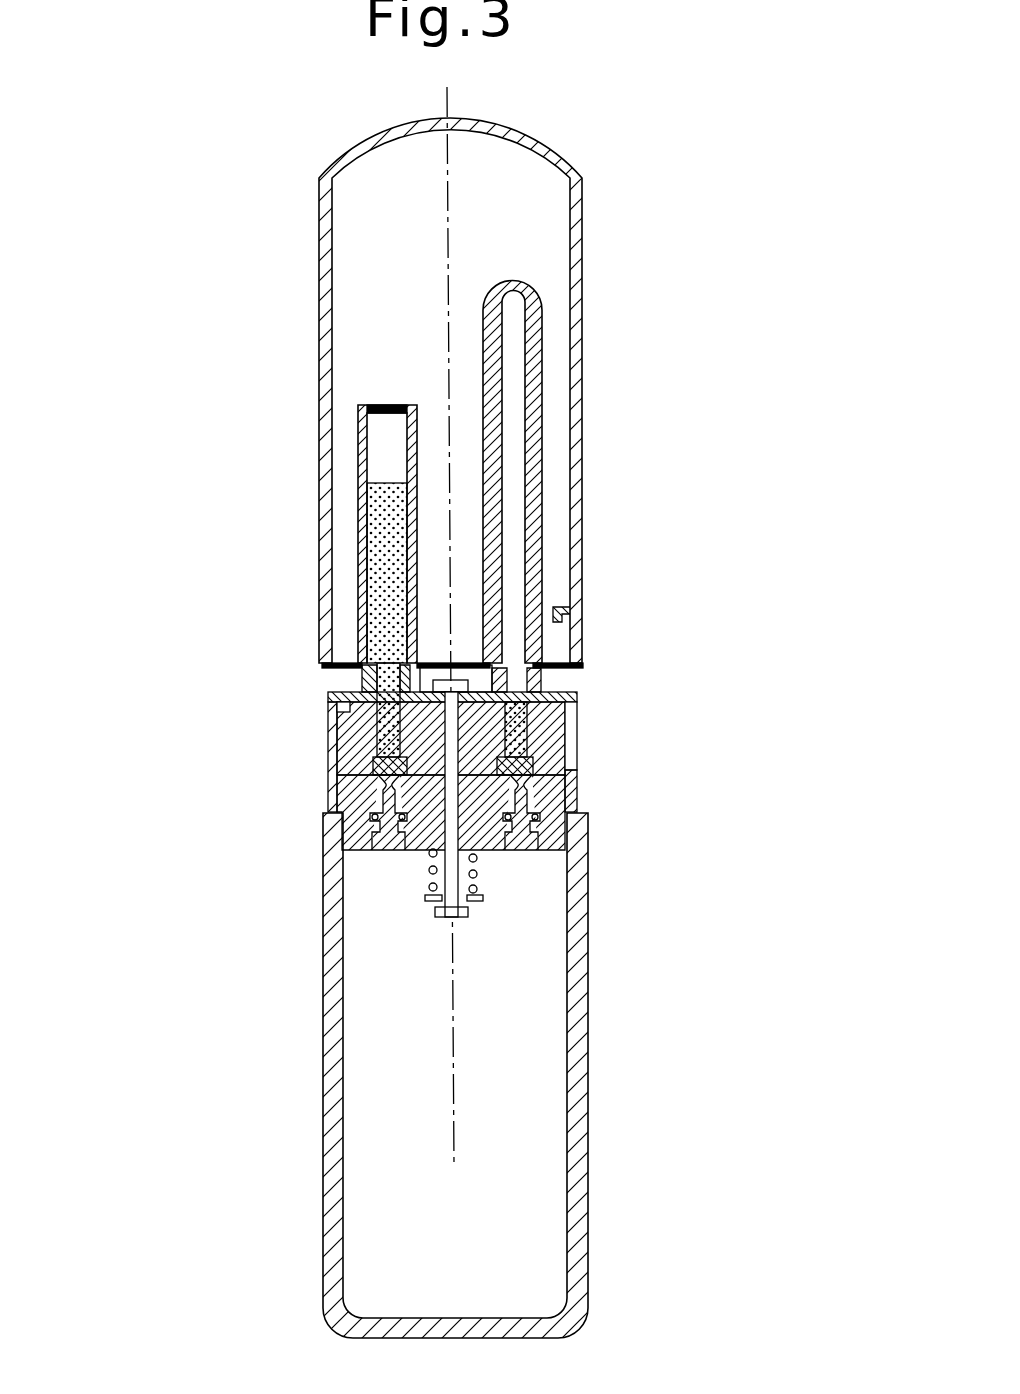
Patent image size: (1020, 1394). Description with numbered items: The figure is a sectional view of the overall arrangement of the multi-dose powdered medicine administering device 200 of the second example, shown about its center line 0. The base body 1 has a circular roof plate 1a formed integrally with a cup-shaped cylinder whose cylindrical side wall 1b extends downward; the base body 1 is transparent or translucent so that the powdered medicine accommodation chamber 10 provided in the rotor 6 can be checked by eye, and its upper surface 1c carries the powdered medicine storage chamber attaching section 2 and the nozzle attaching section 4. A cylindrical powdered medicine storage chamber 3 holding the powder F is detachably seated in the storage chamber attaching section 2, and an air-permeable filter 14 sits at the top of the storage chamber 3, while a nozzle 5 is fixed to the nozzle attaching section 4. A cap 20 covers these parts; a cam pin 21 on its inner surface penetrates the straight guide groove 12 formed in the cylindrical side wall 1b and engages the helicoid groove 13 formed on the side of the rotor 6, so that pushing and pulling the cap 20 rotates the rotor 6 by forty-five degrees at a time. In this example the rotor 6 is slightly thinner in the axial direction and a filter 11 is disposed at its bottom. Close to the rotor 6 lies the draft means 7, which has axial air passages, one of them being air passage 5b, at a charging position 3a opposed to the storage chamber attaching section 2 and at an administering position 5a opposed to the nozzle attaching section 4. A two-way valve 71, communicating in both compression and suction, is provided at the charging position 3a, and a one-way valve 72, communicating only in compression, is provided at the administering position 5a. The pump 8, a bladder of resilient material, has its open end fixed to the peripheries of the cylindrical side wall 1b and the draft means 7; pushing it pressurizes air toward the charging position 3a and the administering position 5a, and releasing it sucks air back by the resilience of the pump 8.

The center line 0 is at (447, 87).
The base body 1 is at (323, 740).
The circular roof plate 1a is at (425, 655).
The cylindrical side wall 1b is at (328, 800).
The upper surface 1c is at (327, 694).
The powdered medicine storage chamber attaching section 2 is at (362, 683).
The powdered medicine storage chamber 3 is at (357, 440).
The charging position 3a is at (382, 793).
The nozzle attaching section 4 is at (560, 675).
The nozzle 5 is at (507, 276).
The administering position 5a is at (530, 788).
The air passage 5b is at (512, 848).
The rotor 6 is at (545, 717).
The draft means 7 is at (353, 790).
The pump 8 is at (580, 1115).
The powdered medicine accommodation chamber 10 is at (373, 737).
The filter 11 is at (373, 763).
The guide groove 12 is at (568, 744).
The helicoid groove 13 is at (577, 697).
The filter 14 is at (378, 403).
The cap 20 is at (583, 292).
The cam pin 21 is at (558, 610).
The two-way valve 71 is at (390, 852).
The one-way valve 72 is at (528, 840).
The multi-dose powdered medicine administering device 200 is at (622, 633).
The powder F is at (357, 503).